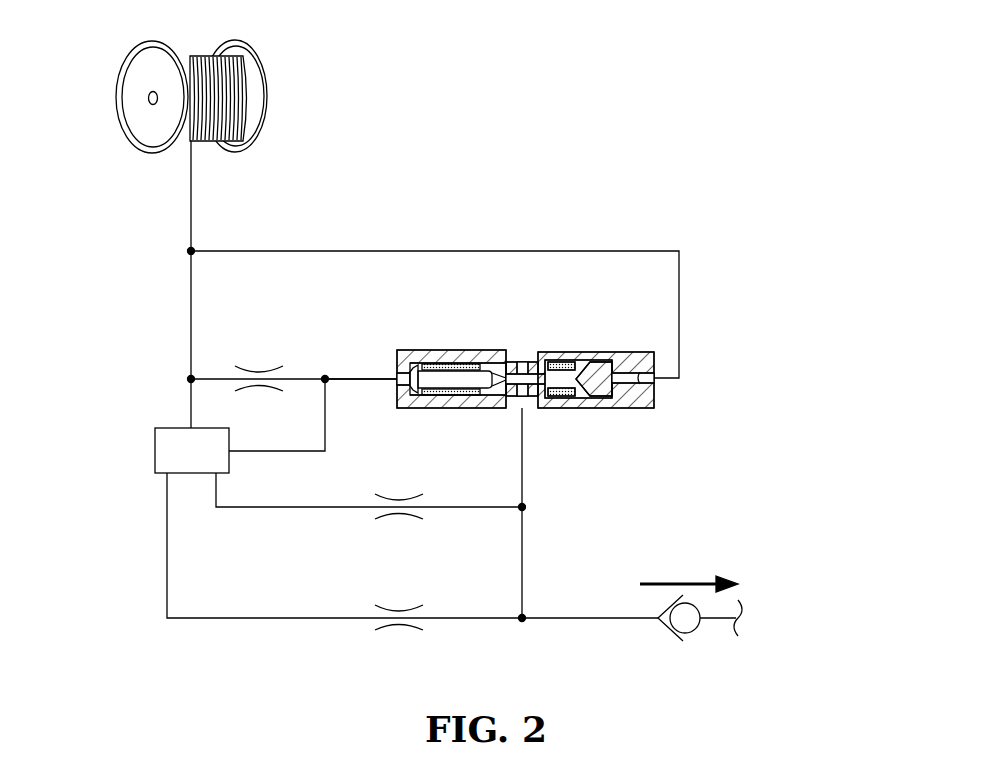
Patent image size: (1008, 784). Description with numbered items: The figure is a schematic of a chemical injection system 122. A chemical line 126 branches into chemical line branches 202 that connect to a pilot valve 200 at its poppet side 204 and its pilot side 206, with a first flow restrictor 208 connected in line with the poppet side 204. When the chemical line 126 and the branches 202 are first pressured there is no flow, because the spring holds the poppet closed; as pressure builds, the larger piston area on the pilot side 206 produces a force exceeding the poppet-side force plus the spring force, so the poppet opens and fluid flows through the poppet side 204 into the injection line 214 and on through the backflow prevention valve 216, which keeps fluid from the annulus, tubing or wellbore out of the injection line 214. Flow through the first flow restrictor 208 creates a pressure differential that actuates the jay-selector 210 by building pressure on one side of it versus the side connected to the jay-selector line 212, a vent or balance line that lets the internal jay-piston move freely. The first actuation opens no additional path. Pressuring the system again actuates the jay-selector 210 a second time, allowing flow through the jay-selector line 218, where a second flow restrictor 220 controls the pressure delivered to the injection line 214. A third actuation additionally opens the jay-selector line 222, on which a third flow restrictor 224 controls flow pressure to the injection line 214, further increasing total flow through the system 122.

The chemical injection system 122 is at (631, 60).
The chemical line 126 is at (192, 197).
The pilot valve 200 is at (591, 338).
The chemical line branches 202 is at (191, 330).
The poppet side 204 is at (397, 377).
The pilot side 206 is at (638, 379).
The first flow restrictor 208 is at (260, 373).
The jay-selector 210 is at (155, 452).
The jay-selector line 212 is at (327, 425).
The injection line 214 is at (522, 552).
The backflow prevention valve 216 is at (692, 640).
The jay-selector line 218 is at (262, 508).
The second flow restrictor 220 is at (398, 512).
The jay-selector line 222 is at (260, 622).
The third flow restrictor 224 is at (398, 624).